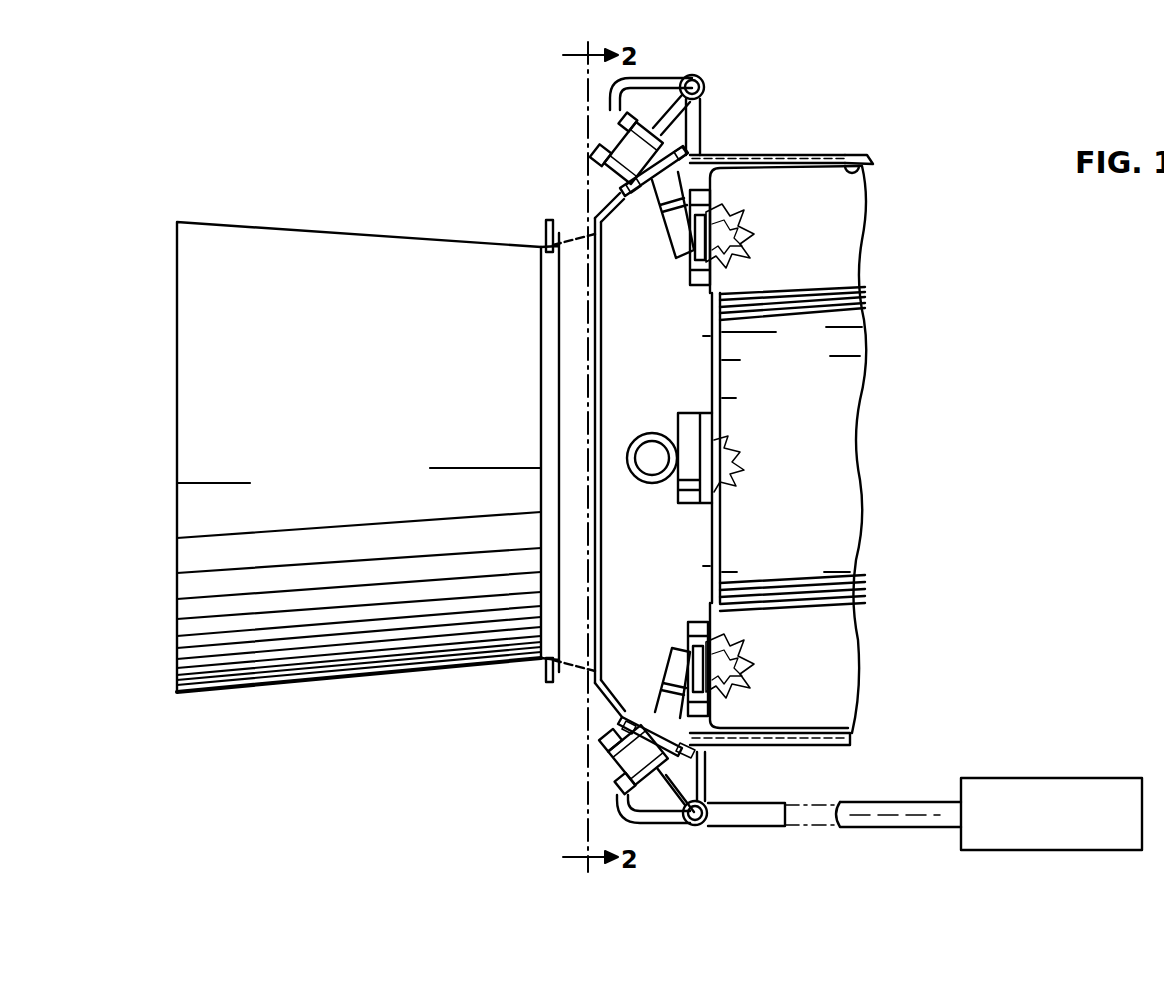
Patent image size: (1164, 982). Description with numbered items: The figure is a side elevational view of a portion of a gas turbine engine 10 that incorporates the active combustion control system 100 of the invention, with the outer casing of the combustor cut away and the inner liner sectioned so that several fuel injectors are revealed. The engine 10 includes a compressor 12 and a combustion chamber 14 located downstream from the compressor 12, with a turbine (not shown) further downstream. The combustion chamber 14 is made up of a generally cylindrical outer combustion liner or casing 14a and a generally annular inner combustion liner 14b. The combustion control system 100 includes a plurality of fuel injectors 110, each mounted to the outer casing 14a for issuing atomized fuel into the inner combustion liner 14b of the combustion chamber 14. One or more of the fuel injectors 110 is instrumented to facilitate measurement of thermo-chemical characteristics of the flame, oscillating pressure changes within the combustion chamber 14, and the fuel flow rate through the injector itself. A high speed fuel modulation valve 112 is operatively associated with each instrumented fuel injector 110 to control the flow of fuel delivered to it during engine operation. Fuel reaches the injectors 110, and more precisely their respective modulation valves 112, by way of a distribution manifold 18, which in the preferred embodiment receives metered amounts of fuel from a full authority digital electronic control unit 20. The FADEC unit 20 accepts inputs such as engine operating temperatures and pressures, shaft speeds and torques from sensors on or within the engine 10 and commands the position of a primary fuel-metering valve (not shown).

The gas turbine engine 10 is at (1037, 383).
The compressor 12 is at (330, 196).
The combustion chamber 14 is at (845, 512).
The outer combustion liner or casing 14a is at (772, 156).
The inner combustion liner 14b is at (866, 162).
The distribution manifold 18 is at (704, 120).
The full authority digital electronic control (FADEC) unit 20 is at (1037, 790).
The active combustion control system 100 is at (688, 74).
The fuel injector 110 is at (624, 194).
The high speed fuel modulation valve 112 is at (598, 155).